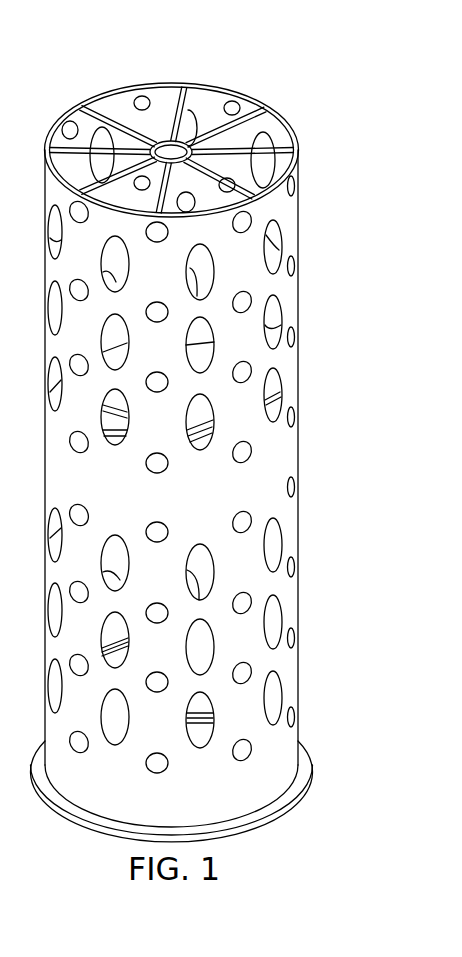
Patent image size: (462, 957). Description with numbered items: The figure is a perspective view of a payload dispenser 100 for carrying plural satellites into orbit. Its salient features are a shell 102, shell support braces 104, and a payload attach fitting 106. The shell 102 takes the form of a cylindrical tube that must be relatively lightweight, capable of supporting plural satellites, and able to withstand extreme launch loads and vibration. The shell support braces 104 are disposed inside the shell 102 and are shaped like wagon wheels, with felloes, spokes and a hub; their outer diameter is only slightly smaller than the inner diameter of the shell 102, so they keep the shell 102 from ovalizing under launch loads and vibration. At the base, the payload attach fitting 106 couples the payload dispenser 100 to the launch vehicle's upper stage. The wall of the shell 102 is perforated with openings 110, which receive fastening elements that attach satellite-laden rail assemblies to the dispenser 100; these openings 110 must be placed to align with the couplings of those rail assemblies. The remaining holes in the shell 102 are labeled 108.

The payload dispenser 100 is at (378, 222).
The shell 102 is at (298, 468).
The shell support braces 104 is at (270, 110).
The payload attach fitting 106 is at (297, 756).
The large elongated holes 108 is at (102, 137).
The openings 110 is at (228, 108).